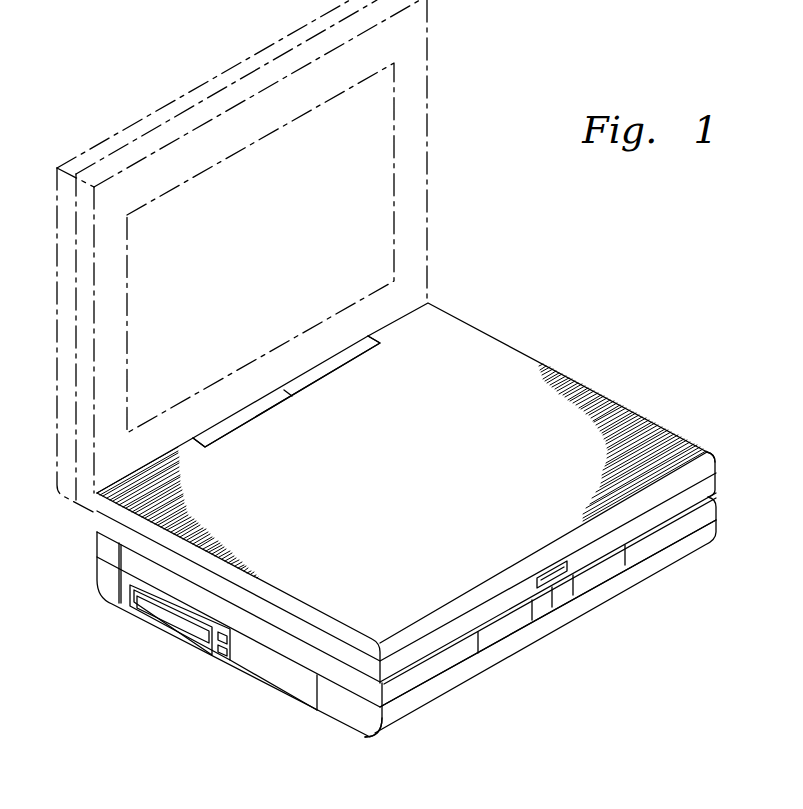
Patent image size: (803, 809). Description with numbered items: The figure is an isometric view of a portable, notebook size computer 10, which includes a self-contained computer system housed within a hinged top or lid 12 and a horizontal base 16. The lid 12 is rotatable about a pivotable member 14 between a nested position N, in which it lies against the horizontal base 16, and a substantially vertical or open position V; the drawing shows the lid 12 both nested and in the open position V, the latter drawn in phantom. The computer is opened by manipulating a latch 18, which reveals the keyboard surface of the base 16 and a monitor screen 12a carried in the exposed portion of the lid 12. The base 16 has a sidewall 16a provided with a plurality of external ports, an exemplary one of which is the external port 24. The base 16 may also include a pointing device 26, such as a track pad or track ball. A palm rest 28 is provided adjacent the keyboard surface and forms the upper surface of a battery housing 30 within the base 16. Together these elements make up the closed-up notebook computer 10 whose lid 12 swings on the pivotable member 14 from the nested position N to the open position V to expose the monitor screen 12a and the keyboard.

The portable computer 10 is at (617, 269).
The lid 12 is at (427, 77).
The monitor screen 12a is at (394, 197).
The pivotable member 14 is at (325, 370).
The base 16 is at (97, 593).
The sidewall 16a is at (278, 677).
The latch 18 is at (552, 567).
The external port 24 is at (173, 625).
The pointing device 26 is at (502, 628).
The palm rest 28 is at (425, 672).
The battery housing 30 is at (337, 725).
The open position V is at (138, 122).
The nested position N is at (713, 455).